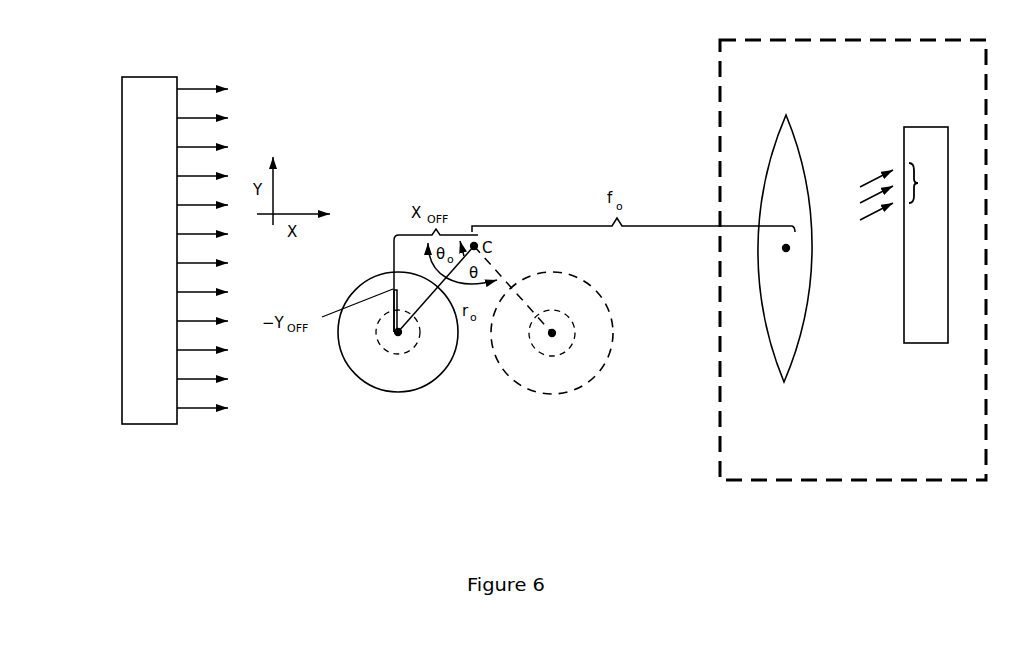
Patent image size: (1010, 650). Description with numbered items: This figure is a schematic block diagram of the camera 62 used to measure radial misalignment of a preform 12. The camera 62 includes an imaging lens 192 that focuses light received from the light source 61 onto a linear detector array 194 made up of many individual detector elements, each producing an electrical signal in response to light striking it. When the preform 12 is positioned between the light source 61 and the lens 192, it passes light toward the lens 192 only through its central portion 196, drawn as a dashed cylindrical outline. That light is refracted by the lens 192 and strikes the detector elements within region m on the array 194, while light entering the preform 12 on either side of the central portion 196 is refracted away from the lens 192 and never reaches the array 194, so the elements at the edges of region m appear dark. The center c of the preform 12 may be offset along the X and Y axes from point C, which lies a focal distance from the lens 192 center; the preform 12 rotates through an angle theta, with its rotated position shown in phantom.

The light source 61 is at (223, 233).
The camera 62 is at (717, 88).
The preform 12 is at (362, 380).
The central portion 196 is at (397, 353).
The imaging lens 192 is at (797, 355).
The linear detector array 194 is at (922, 135).